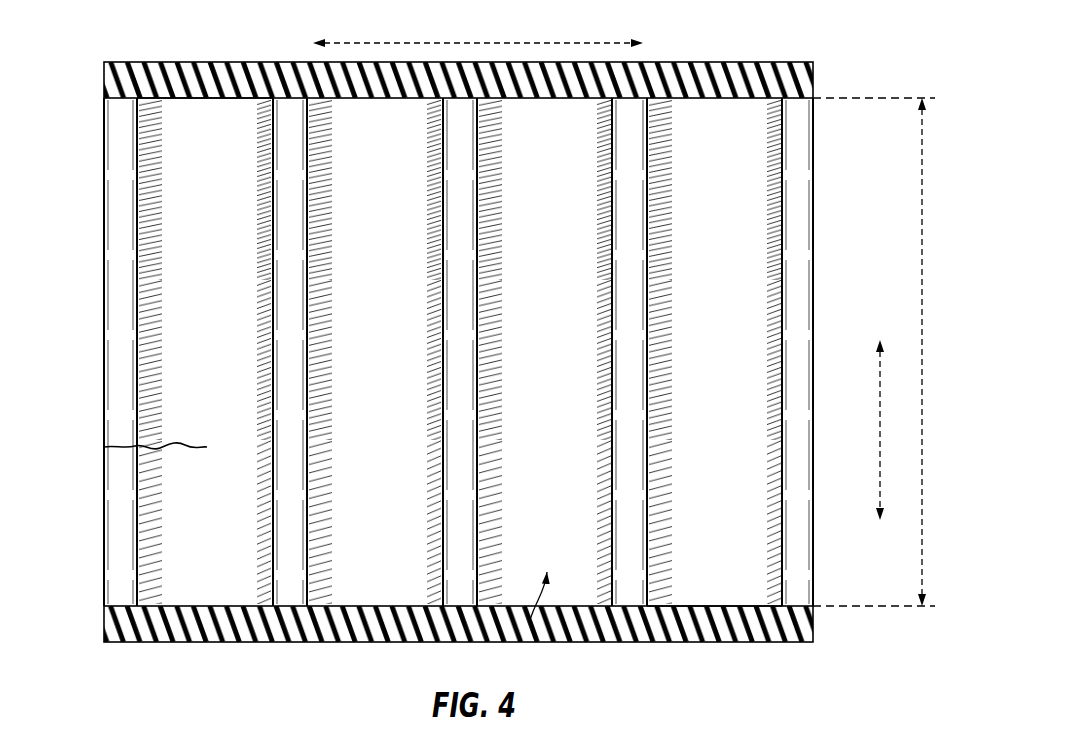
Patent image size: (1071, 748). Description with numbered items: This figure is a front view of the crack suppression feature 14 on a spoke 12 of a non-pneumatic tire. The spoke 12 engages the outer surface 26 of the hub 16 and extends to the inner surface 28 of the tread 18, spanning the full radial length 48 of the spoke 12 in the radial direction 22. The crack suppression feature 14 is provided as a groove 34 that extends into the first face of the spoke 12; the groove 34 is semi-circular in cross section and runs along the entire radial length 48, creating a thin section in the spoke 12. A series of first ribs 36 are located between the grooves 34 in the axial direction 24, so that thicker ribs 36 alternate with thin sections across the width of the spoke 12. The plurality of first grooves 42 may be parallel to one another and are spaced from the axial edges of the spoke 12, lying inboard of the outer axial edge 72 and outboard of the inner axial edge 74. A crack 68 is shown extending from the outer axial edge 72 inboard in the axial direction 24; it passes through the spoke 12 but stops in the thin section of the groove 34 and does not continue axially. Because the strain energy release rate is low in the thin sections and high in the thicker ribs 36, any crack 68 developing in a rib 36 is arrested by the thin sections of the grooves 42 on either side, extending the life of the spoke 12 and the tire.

The spoke 12 is at (803, 148).
The crack suppression feature 14 is at (177, 365).
The hub 16 is at (765, 73).
The tread 18 is at (700, 628).
The radial direction 22 is at (880, 420).
The axial direction 24 is at (478, 43).
The outer surface 26 is at (168, 100).
The inner surface 28 is at (745, 605).
The groove 34 is at (177, 272).
The first ribs 36 is at (283, 319).
The first grooves 42 is at (530, 620).
The radial length 48 is at (922, 210).
The crack 68 is at (120, 440).
The outer axial edge 72 is at (104, 485).
The inner axial edge 74 is at (813, 305).